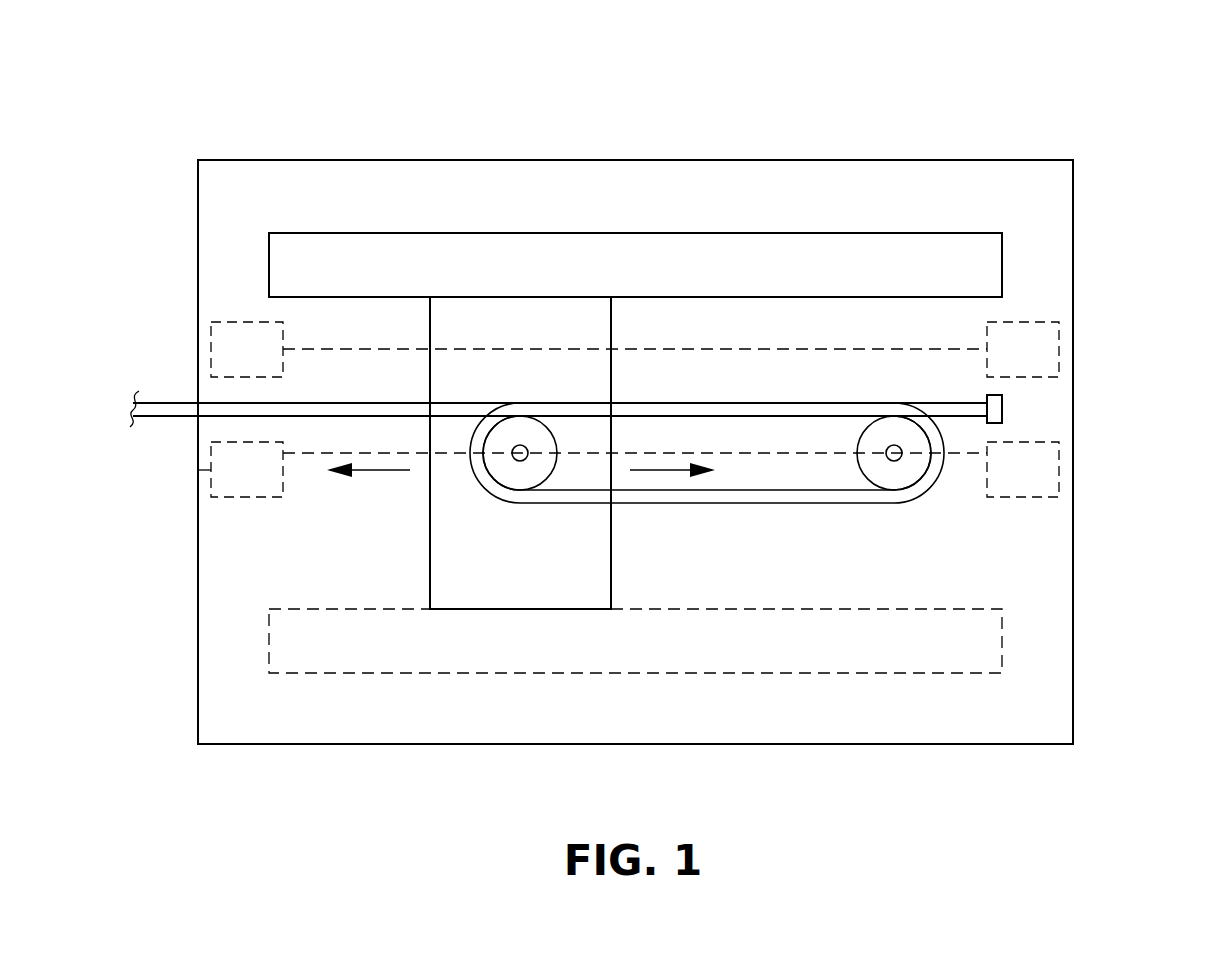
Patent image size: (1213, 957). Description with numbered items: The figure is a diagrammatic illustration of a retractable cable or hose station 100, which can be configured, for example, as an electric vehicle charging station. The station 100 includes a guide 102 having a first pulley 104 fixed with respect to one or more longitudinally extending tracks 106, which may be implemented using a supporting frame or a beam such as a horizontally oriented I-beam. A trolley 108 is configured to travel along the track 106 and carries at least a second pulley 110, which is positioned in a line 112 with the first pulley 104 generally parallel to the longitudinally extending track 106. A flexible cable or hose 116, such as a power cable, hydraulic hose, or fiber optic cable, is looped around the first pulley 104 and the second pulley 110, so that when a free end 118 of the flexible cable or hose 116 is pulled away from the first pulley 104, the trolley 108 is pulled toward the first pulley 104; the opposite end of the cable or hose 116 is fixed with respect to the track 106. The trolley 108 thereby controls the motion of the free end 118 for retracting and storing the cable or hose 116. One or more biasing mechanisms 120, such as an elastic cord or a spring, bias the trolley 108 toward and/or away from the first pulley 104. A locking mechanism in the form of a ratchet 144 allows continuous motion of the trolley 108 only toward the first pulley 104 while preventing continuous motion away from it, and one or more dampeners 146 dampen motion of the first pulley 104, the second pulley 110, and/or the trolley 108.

The retractable cable or hose station 100 is at (211, 93).
The guide 102 is at (1003, 153).
The first pulley 104 is at (930, 466).
The longitudinally extending track 106 is at (505, 233).
The trolley 108 is at (424, 318).
The second pulley 110 is at (550, 432).
The line 112 is at (822, 455).
The flexible cable or hose 116 is at (845, 403).
The free end 118 is at (148, 418).
The biasing mechanism 120 is at (207, 343).
The ratchet 144 is at (1059, 470).
The dampener 146 is at (198, 470).